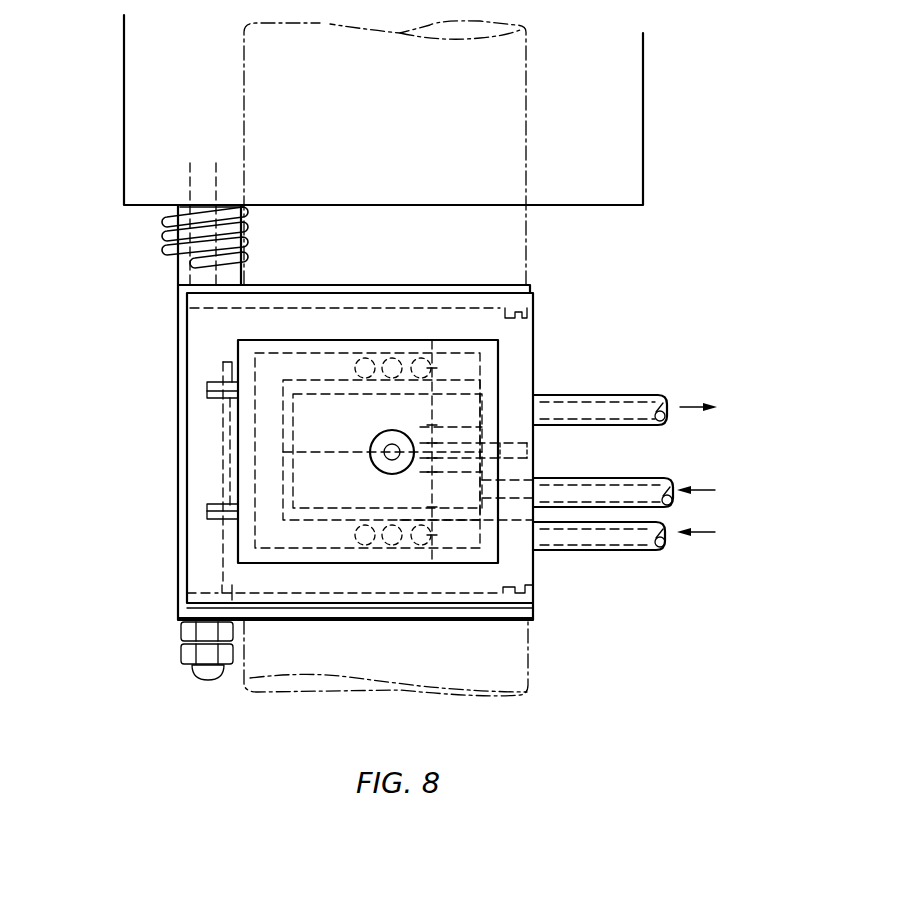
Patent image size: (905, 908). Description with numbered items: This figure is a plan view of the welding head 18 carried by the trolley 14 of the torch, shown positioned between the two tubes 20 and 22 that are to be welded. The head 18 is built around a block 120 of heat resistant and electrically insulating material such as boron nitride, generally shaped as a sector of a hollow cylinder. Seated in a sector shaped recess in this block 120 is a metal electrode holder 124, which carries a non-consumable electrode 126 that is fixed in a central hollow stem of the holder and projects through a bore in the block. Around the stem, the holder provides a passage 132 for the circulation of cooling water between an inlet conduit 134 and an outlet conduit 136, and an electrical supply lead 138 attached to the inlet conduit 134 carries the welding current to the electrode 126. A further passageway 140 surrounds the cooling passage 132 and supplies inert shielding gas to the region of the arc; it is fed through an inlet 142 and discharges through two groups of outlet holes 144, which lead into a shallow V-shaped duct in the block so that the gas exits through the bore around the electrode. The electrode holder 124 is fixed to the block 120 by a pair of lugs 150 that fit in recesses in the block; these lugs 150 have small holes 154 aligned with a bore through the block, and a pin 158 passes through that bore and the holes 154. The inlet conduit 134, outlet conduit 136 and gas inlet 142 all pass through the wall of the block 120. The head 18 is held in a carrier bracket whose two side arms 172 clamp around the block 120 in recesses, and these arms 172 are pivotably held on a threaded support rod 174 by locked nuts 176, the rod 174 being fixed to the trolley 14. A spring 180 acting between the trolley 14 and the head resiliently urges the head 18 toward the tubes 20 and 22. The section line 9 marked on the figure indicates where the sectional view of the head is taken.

The section line 9— 9 is at (128, 450).
The trolley 14 is at (582, 170).
The welding head 18 is at (412, 536).
The tube 20 is at (476, 91).
The tube 22 is at (505, 668).
The block 120 is at (518, 566).
The electrode holder 124 is at (496, 354).
The non-consumable electrode 126 is at (392, 447).
The passage 132 is at (349, 452).
The inlet conduit 134 is at (580, 479).
The outlet conduit 136 is at (580, 396).
The electrical supply lead 138 is at (668, 503).
The passageway 140 is at (298, 546).
The inlet 142 is at (639, 551).
The outlet holes 144 is at (392, 356).
The lugs 150 is at (207, 387).
The holes 154 is at (212, 393).
The pin 158 is at (223, 461).
The side arms 172 is at (492, 284).
The threaded support rod 174 is at (196, 171).
The locked nuts 176 is at (183, 656).
The spring 180 is at (182, 254).